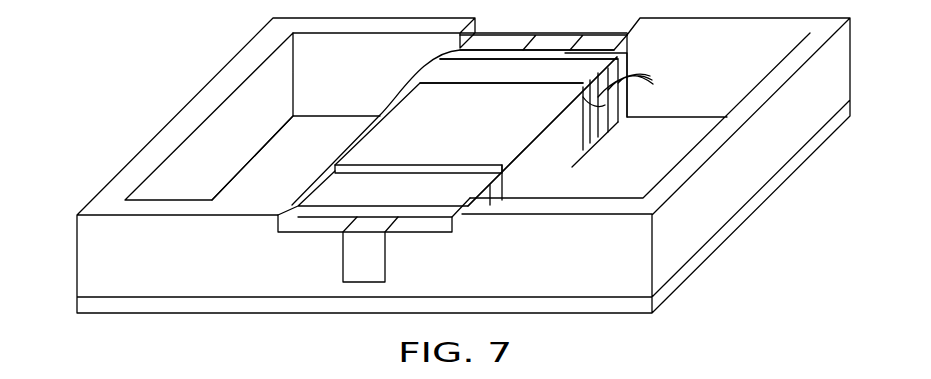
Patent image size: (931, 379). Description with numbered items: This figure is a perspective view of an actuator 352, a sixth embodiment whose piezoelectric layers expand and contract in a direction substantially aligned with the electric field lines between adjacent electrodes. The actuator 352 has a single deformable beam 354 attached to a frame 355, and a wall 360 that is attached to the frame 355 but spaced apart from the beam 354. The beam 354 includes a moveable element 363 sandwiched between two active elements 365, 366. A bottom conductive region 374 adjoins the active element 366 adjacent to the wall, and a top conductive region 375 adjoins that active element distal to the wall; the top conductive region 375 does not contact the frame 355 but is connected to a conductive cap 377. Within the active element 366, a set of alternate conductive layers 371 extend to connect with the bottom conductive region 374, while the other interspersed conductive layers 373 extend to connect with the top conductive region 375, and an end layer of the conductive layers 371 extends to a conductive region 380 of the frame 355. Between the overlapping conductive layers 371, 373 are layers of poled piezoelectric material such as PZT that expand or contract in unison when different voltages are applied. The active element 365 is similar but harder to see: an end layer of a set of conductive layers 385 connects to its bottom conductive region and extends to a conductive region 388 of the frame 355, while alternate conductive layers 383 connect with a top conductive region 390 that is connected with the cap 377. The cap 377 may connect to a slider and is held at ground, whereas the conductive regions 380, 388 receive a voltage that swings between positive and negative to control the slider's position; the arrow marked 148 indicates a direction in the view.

The actuator 352 is at (112, 84).
The frame 355 is at (745, 178).
The wall 360 is at (287, 152).
The deformable beam 354 is at (380, 114).
The moveable element 363 is at (451, 118).
The active element 365 is at (392, 182).
The top conductive region 390 is at (443, 195).
The active element 366 is at (508, 52).
The conductive region 380 is at (558, 34).
The top conductive region 375 is at (526, 76).
The conductive cap 377 is at (540, 132).
The bottom conductive region 374 is at (585, 154).
The conductive layers 371 is at (624, 134).
The conductive layers 373 is at (636, 85).
The conductive region 388 is at (343, 258).
The conductive layers 385 is at (495, 200).
The conductive layers 383 is at (510, 200).
The light direction 148 is at (738, 315).